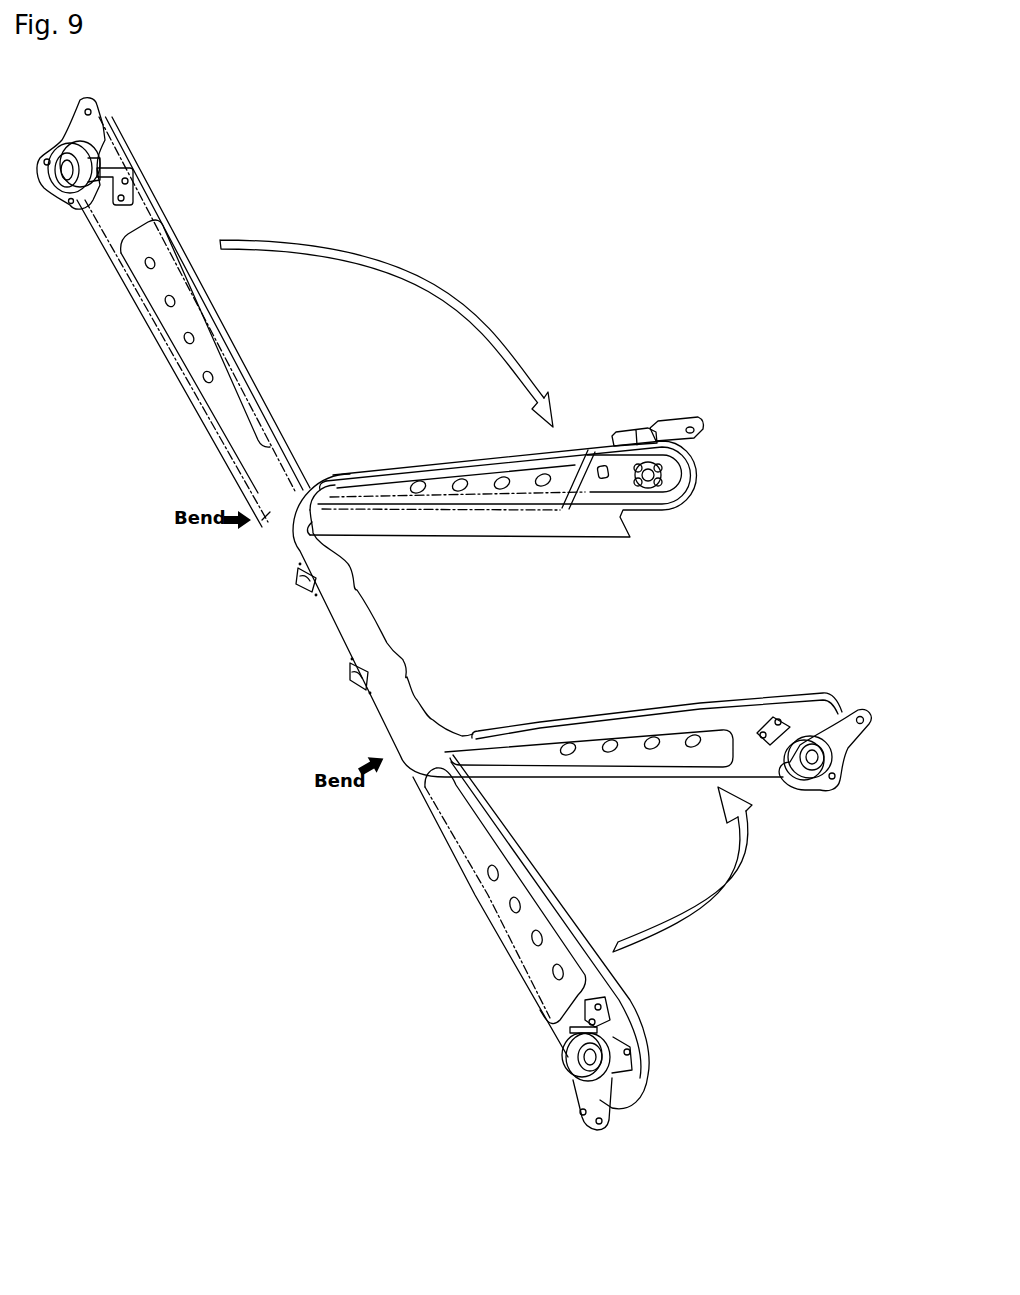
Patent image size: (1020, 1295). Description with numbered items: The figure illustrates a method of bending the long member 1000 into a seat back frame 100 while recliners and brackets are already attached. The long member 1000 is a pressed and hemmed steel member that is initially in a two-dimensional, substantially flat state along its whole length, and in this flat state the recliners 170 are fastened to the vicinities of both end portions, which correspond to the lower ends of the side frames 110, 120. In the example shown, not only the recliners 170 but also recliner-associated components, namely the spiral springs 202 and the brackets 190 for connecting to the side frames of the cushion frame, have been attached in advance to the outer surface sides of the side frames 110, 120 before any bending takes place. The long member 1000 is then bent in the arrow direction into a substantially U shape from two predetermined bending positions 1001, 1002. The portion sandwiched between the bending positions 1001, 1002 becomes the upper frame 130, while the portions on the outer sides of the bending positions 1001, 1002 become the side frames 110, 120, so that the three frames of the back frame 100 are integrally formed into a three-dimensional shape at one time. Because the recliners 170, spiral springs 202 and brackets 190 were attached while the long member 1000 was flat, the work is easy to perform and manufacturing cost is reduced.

The back frame 100 is at (387, 461).
The side frame 110 is at (455, 460).
The side frame 120 is at (597, 777).
The upper frame 130 is at (345, 637).
The recliner 170 is at (110, 160).
The bracket 190 is at (64, 207).
The spiral spring 202 is at (63, 148).
The long member 1000 is at (204, 426).
The bending position 1001 is at (262, 520).
The bending position 1002 is at (410, 762).